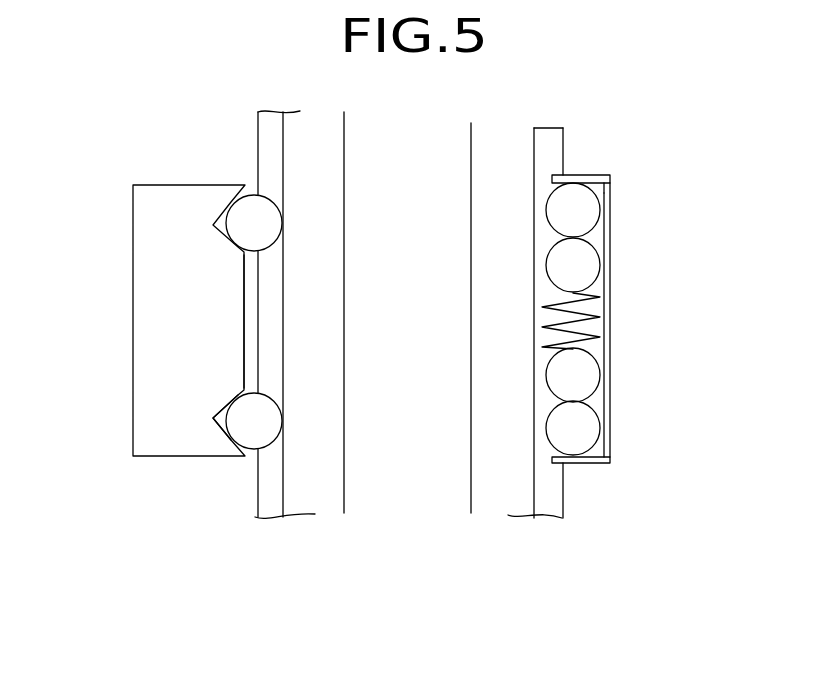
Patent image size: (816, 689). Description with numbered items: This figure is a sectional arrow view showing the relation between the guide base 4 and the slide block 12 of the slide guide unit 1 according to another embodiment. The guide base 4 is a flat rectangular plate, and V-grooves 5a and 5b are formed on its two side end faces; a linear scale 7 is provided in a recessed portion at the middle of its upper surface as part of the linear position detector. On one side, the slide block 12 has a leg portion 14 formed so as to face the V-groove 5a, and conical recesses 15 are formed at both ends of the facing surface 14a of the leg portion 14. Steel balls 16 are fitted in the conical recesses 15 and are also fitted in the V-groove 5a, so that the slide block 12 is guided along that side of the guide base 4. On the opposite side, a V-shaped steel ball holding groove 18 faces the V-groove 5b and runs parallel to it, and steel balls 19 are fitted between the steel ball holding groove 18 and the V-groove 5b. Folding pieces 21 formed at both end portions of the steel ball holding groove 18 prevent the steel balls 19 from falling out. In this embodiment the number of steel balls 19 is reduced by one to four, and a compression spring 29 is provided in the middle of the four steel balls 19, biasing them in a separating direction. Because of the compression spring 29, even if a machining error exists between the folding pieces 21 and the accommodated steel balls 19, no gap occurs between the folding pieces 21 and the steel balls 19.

The slide guide unit 1 is at (229, 80).
The guide base 4 is at (569, 333).
The V-groove 5a is at (270, 495).
The V-groove 5b is at (543, 510).
The linear scale 7 is at (472, 165).
The slide block 12 is at (232, 313).
The leg portion 14 is at (165, 327).
The facing surface 14a is at (245, 334).
The conical recess 15 is at (223, 431).
The steel ball 16 is at (273, 391).
The steel ball holding groove 18 is at (633, 326).
The steel ball 19 is at (593, 413).
The folding piece 21 is at (596, 173).
The compression spring 29 is at (598, 325).